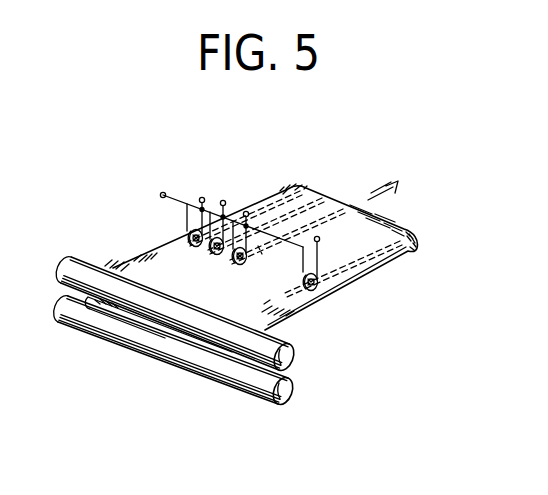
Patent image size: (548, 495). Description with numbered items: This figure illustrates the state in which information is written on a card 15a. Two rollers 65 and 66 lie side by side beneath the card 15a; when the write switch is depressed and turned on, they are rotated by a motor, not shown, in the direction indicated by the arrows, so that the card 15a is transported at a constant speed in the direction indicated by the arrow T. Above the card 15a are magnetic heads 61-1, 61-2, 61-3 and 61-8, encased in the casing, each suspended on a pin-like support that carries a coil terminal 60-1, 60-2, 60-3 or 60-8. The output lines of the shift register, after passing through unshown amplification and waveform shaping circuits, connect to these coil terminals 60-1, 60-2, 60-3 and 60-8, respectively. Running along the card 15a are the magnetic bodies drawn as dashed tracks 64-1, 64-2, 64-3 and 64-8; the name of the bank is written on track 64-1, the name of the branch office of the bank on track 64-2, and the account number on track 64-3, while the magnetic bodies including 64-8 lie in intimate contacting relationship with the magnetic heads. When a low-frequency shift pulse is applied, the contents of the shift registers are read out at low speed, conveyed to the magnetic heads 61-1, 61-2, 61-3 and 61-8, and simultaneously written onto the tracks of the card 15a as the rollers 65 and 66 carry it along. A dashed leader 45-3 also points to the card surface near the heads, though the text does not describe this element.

The card 15a is at (398, 222).
The arrow T (card transport direction) T is at (392, 177).
The tape 45-3 is at (262, 254).
The coil terminal 60-1 is at (202, 198).
The coil terminal 60-2 is at (221, 202).
The coil terminal 60-3 is at (254, 193).
The coil terminal 60-8 is at (320, 239).
The magnetic head 61-1 is at (178, 242).
The magnetic head 61-2 is at (200, 258).
The magnetic head 61-3 is at (237, 264).
The magnetic head 61-8 is at (311, 291).
The track 64-1 is at (288, 197).
The track 64-2 is at (312, 207).
The track 64-3 is at (332, 212).
The magnetic body (track) 64-8 is at (410, 251).
The roller 65 is at (296, 356).
The roller 66 is at (296, 394).